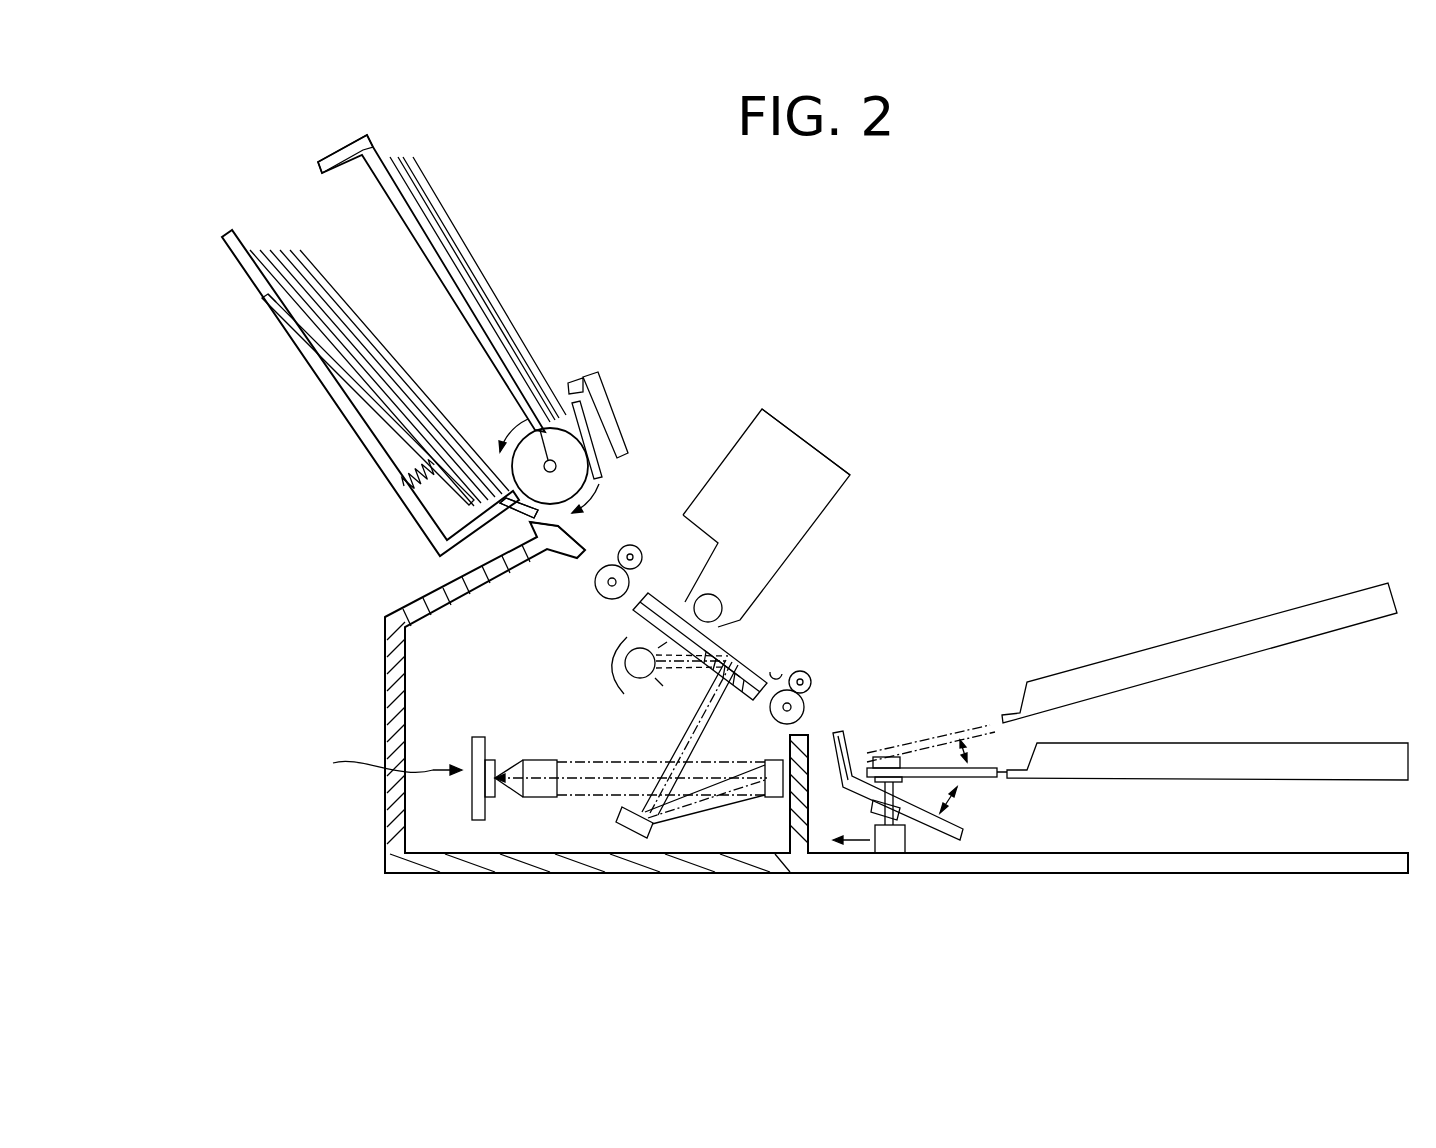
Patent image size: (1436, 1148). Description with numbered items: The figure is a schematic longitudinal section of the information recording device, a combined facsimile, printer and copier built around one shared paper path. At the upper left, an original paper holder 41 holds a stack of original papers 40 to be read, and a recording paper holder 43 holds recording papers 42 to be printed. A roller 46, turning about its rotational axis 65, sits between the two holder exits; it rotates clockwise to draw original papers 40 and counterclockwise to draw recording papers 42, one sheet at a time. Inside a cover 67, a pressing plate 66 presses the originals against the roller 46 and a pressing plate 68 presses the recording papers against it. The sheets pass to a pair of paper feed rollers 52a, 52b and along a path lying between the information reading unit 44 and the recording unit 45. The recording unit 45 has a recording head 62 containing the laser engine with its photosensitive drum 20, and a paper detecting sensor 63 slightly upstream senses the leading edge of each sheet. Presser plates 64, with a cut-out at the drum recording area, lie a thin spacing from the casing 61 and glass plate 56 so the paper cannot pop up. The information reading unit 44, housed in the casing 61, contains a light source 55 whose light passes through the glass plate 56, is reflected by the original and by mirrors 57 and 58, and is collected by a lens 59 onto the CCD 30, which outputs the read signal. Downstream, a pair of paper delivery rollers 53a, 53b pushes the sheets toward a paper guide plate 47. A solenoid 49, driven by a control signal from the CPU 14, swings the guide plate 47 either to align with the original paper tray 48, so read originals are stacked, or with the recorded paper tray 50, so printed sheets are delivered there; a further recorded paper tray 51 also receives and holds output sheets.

The photosensitive drum 20 is at (716, 596).
The CCD 30 is at (475, 820).
The original papers 40 is at (452, 203).
The original paper holder 41 is at (372, 150).
The recording papers 42 is at (338, 278).
The recording paper holder 43 is at (272, 298).
The information reading unit 44 is at (379, 766).
The recording unit 45 is at (793, 408).
The roller 46 is at (555, 497).
The paper guide plate 47 is at (960, 735).
The original paper tray 48 is at (1093, 875).
The solenoid 49 is at (907, 840).
The recorded paper tray 50 is at (1333, 780).
The recorded paper tray 51 is at (1308, 642).
The paper feed roller 52a is at (630, 545).
The paper feed roller 52b is at (607, 590).
The paper delivery roller 53a is at (808, 676).
The paper delivery roller 53b is at (804, 705).
The light source 55 is at (632, 670).
The glass plate 56 is at (773, 668).
The mirror 57 is at (637, 838).
The mirror 58 is at (775, 797).
The lens 59 is at (540, 797).
The casing 61 is at (387, 680).
The recording head 62 is at (725, 455).
The paper detecting sensor 63 is at (643, 597).
The presser plate 64 is at (790, 670).
The rotational axis 65 is at (533, 423).
The pressing plate 66 is at (578, 383).
The cover 67 is at (610, 391).
The pressing plate 68 is at (522, 514).
The CPU 14 is at (870, 840).